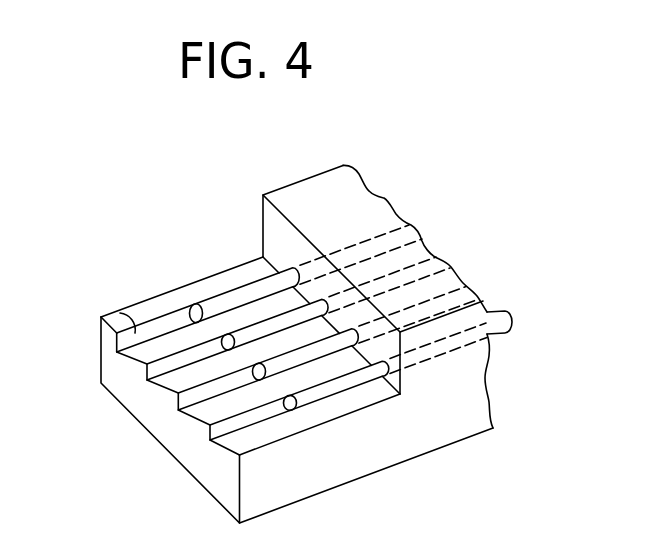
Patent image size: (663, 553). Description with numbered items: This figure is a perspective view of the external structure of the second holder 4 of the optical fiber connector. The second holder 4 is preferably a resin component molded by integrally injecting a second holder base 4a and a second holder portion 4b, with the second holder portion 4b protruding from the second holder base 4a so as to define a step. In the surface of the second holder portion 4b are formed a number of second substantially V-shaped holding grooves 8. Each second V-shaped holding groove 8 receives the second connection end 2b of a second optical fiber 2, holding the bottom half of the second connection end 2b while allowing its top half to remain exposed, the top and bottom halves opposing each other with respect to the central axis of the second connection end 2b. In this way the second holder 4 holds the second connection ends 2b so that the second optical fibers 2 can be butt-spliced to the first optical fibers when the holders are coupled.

The second optical fiber 2 is at (491, 312).
The second connection end 2b is at (247, 290).
The second holder 4 is at (295, 160).
The second holder base 4a is at (322, 173).
The second holder portion 4b is at (152, 298).
The second V-shaped holding grooves 8 is at (131, 320).